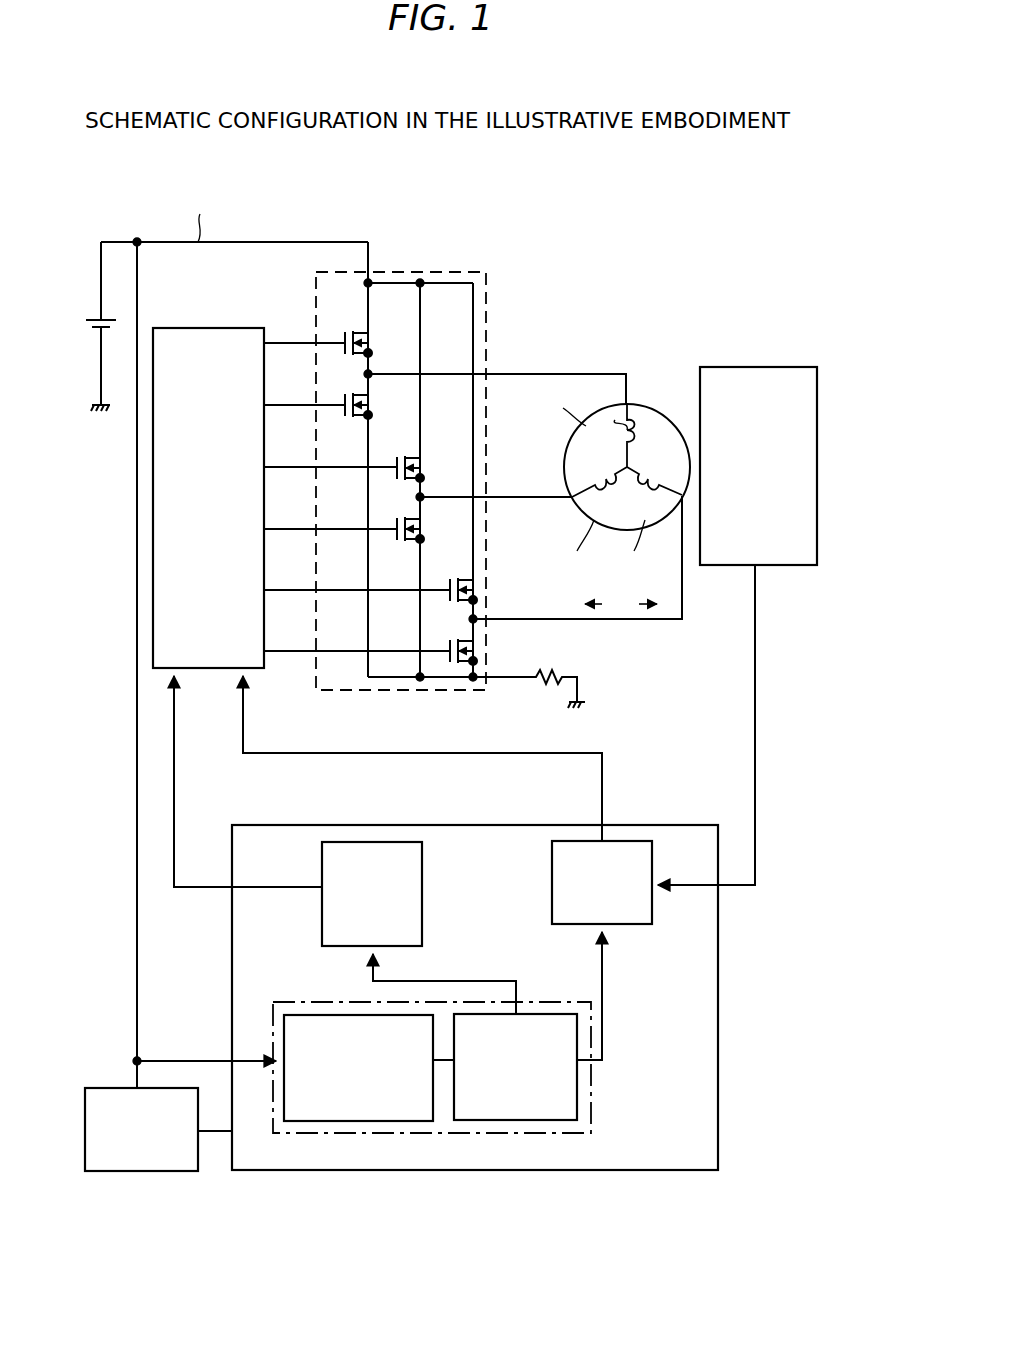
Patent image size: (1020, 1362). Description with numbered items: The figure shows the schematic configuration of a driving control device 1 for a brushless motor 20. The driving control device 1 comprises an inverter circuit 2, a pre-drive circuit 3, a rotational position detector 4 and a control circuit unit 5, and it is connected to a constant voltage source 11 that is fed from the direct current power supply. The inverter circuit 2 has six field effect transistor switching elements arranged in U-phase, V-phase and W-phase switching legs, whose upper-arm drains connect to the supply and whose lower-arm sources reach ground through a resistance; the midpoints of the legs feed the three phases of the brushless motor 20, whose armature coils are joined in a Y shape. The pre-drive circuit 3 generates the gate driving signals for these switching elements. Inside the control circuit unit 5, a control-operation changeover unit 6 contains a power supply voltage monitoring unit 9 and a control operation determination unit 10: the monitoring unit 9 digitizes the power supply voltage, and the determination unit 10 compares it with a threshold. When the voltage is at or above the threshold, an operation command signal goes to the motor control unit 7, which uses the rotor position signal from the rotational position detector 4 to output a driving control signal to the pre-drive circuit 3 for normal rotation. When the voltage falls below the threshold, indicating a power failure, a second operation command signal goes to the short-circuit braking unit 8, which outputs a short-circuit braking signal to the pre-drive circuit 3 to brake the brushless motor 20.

The driving control device 1 is at (622, 250).
The inverter circuit 2 is at (432, 272).
The pre-drive circuit 3 is at (208, 328).
The rotational position detector 4 is at (754, 367).
The control circuit unit 5 is at (718, 990).
The control-operation changeover unit 6 is at (591, 1105).
The motor control unit 7 is at (552, 882).
The short-circuit braking unit 8 is at (422, 887).
The power supply voltage monitoring unit 9 is at (337, 1015).
The control operation determination unit 10 is at (558, 1014).
The constant voltage source 11 is at (100, 1088).
The brushless motor 20 is at (653, 404).